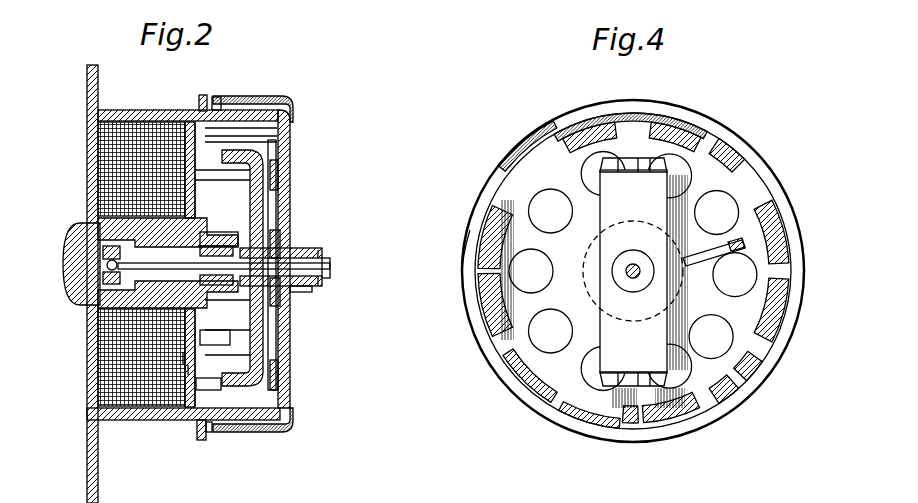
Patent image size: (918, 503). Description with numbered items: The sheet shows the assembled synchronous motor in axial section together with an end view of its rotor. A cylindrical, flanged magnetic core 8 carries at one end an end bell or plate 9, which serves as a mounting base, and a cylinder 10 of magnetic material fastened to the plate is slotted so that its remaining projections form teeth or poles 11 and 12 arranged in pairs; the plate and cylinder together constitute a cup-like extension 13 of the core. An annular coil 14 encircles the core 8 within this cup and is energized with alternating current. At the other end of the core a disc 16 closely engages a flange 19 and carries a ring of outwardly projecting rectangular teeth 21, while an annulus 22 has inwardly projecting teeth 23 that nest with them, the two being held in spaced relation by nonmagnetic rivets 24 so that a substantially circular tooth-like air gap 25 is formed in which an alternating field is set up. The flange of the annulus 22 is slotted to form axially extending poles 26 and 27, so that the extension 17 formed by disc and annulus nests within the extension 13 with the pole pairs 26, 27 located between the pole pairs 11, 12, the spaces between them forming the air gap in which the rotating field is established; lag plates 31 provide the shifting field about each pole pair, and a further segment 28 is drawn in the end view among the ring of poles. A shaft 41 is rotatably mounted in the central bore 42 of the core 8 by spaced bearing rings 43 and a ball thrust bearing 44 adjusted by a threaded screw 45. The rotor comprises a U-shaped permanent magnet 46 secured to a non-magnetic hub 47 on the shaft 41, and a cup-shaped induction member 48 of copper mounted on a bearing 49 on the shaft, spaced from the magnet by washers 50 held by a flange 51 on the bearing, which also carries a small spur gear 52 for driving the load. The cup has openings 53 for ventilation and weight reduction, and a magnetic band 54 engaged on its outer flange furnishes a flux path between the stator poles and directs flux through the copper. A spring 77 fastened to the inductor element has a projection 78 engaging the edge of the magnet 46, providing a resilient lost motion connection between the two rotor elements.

In FIG. 2, the magnetic core 8 is at (68, 280).
In FIG. 2, the end bell or plate 9 is at (87, 465).
In FIG. 2, the cylinder 10 is at (113, 110).
In FIG. 2, the teeth or poles 11 is at (158, 110).
In FIG. 4, the teeth or poles 11 is at (682, 128).
In FIG. 4, the teeth or poles 12 is at (582, 118).
In FIG. 2, the cup-like extension 13 is at (87, 340).
In FIG. 2, the annular coil 14 is at (110, 388).
In FIG. 2, the disc 16 is at (216, 345).
In FIG. 2, the extension 17 is at (203, 95).
In FIG. 2, the flange 19 is at (272, 220).
In FIG. 2, the outwardly projecting rectangular teeth 21 is at (262, 160).
In FIG. 2, the annulus 22 is at (192, 425).
In FIG. 2, the inwardly projecting teeth 23 is at (190, 370).
In FIG. 2, the nonmagnetic rivets 24 is at (185, 360).
In FIG. 2, the air gap 25 is at (232, 118).
In FIG. 4, the poles 26 is at (530, 150).
In FIG. 2, the poles 27 is at (270, 135).
In FIG. 4, the poles 27 is at (735, 160).
In FIG. 4, the magnet 28 is at (770, 215).
In FIG. 2, the lag plates 31 is at (203, 440).
In FIG. 2, the shaft 41 is at (330, 268).
In FIG. 4, the shaft 41 is at (625, 270).
In FIG. 2, the central bore 42 is at (150, 252).
In FIG. 2, the bearing rings 43 is at (118, 285).
In FIG. 2, the ball thrust bearing 44 is at (110, 262).
In FIG. 2, the threaded screw 45 is at (66, 262).
In FIG. 2, the U-shaped permanent or bar magnet 46 is at (278, 325).
In FIG. 4, the U-shaped permanent or bar magnet 46 is at (670, 290).
In FIG. 2, the non-magnetic hub 47 is at (283, 300).
In FIG. 4, the non-magnetic hub 47 is at (628, 266).
In FIG. 2, the cup-shaped induction member 48 is at (262, 200).
In FIG. 4, the cup-shaped induction member 48 is at (472, 260).
In FIG. 2, the bearing 49 is at (318, 252).
In FIG. 2, the washers 50 is at (290, 240).
In FIG. 2, the flange 51 is at (318, 279).
In FIG. 2, the spur gear 52 is at (312, 290).
In FIG. 2, the openings 53 is at (287, 180).
In FIG. 4, the openings 53 is at (590, 330).
In FIG. 2, the magnetic band 54 is at (275, 100).
In FIG. 4, the magnetic band 54 is at (628, 132).
In FIG. 4, the spring 77 is at (705, 245).
In FIG. 2, the projection 78 is at (262, 365).
In FIG. 4, the projection 78 is at (725, 250).